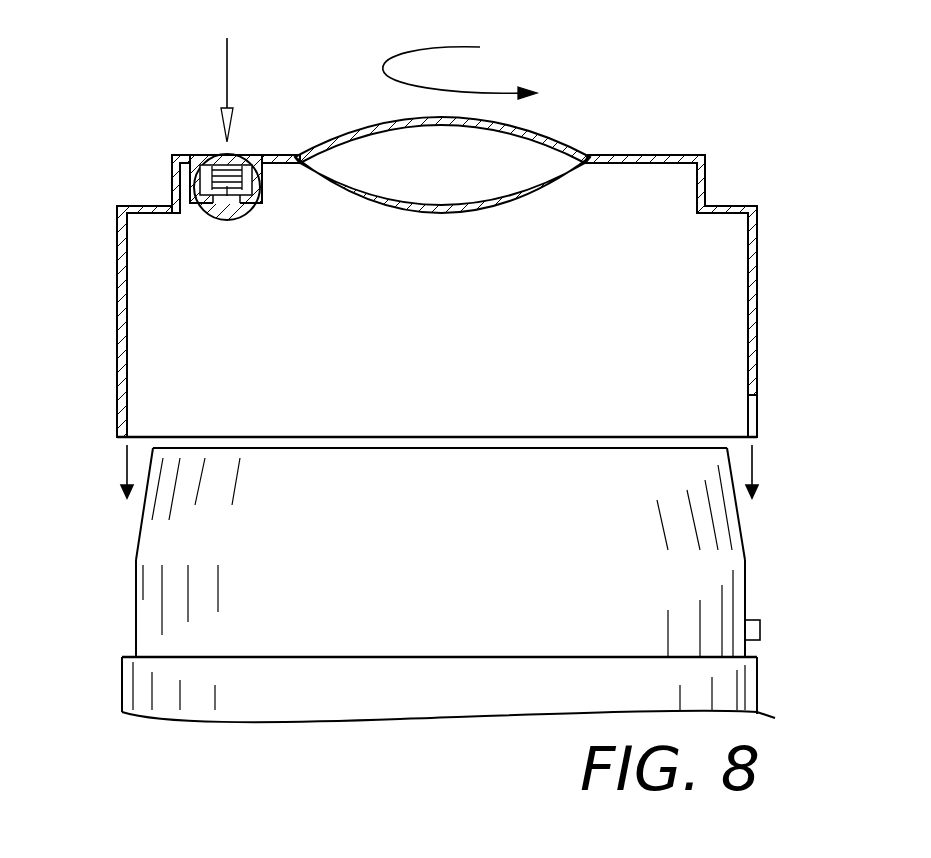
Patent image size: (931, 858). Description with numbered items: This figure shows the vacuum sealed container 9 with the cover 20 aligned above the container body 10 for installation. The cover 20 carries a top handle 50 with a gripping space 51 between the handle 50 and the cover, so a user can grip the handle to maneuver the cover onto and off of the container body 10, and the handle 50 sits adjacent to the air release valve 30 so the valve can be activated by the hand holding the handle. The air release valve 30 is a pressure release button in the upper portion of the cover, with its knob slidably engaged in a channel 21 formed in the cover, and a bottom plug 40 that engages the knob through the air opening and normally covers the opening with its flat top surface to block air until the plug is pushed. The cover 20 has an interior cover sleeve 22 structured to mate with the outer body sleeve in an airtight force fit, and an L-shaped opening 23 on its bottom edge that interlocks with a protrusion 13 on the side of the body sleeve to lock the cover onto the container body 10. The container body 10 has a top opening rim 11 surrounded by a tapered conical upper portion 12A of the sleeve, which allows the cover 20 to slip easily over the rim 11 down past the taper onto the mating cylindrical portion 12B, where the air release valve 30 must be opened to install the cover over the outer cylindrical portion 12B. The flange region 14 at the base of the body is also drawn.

The vacuum sealed container 9 is at (767, 188).
The container body 10 is at (442, 691).
The open top 11 is at (510, 448).
The tapered conical upper portion 12A is at (143, 510).
The mating cylindrical portion 12B is at (135, 595).
The protrusion 13 is at (762, 632).
The flange top surface 14 is at (548, 655).
The cover 20 is at (462, 261).
The channel 21 is at (172, 193).
The interior cover sleeve 22 is at (185, 369).
The L-shaped opening 23 is at (758, 412).
The air release valve 30 is at (222, 171).
The bottom plug 40 is at (230, 223).
The handle 50 is at (457, 124).
The gripping space 51 is at (502, 165).